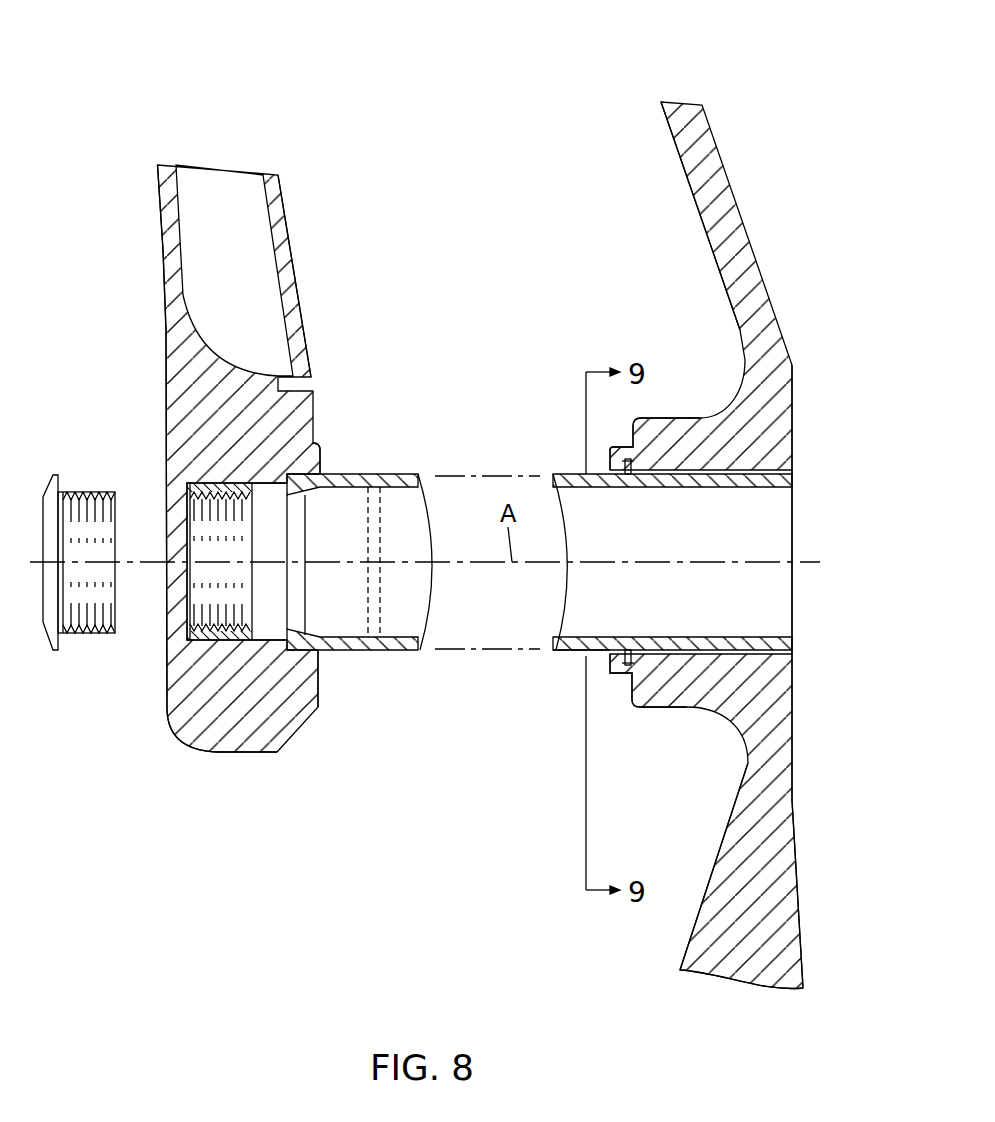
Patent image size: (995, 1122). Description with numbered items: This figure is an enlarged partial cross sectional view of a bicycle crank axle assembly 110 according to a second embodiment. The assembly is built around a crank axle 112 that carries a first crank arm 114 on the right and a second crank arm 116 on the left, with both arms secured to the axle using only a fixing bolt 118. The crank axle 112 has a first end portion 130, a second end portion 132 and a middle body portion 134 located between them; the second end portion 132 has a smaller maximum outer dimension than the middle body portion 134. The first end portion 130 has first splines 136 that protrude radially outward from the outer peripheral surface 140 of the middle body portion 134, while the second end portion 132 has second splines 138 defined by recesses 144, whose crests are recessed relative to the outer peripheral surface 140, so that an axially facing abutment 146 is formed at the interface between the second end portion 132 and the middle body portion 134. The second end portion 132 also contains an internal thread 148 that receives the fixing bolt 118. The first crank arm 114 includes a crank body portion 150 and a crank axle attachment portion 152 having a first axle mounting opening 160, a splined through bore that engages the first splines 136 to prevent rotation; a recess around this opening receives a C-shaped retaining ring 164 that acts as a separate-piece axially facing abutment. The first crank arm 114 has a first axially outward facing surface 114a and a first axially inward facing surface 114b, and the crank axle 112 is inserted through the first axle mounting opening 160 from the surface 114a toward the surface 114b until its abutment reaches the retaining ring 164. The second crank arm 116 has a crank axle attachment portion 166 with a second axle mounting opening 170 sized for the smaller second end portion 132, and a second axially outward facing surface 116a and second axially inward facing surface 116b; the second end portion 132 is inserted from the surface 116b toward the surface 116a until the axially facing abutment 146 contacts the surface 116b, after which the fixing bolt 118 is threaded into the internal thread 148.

The bicycle crank axle assembly 110 is at (598, 52).
The crank axle 112 is at (421, 446).
The first crank arm 114 is at (806, 848).
The first axially outward facing surface 114a is at (803, 965).
The first axially inward facing surface 114b is at (688, 947).
The second crank arm 116 is at (155, 274).
The second axially outward facing surface 116a is at (166, 345).
The second axially inward facing surface 116b is at (300, 282).
The fixing bolt 118 is at (48, 490).
The first end portion 130 is at (752, 458).
The second end portion 132 is at (234, 476).
The middle body portion 134 is at (398, 651).
The first splines 136 is at (692, 466).
The second splines 138 is at (255, 648).
The outer peripheral surface 140 is at (575, 652).
The recesses 144 is at (315, 686).
The axially facing abutment 146 is at (316, 430).
The internal thread 148 is at (212, 500).
The crank body portion 150 is at (723, 840).
The crank axle attachment portion 152 is at (793, 393).
The first axle mounting opening 160 is at (715, 496).
The C-shaped retaining ring 164 is at (632, 657).
The crank axle attachment portion 166 is at (195, 722).
The second axle mounting opening 170 is at (210, 626).